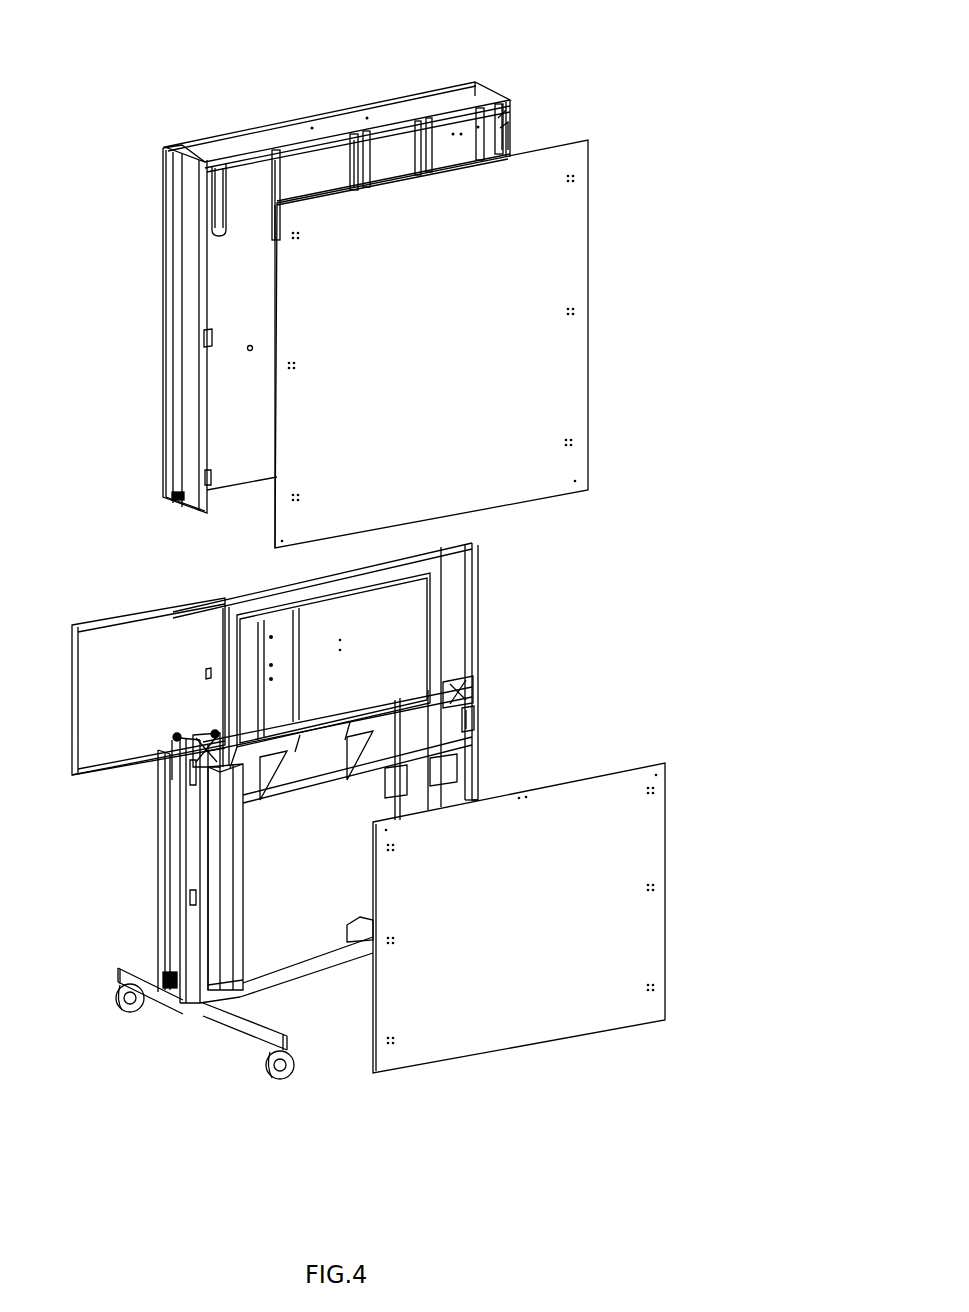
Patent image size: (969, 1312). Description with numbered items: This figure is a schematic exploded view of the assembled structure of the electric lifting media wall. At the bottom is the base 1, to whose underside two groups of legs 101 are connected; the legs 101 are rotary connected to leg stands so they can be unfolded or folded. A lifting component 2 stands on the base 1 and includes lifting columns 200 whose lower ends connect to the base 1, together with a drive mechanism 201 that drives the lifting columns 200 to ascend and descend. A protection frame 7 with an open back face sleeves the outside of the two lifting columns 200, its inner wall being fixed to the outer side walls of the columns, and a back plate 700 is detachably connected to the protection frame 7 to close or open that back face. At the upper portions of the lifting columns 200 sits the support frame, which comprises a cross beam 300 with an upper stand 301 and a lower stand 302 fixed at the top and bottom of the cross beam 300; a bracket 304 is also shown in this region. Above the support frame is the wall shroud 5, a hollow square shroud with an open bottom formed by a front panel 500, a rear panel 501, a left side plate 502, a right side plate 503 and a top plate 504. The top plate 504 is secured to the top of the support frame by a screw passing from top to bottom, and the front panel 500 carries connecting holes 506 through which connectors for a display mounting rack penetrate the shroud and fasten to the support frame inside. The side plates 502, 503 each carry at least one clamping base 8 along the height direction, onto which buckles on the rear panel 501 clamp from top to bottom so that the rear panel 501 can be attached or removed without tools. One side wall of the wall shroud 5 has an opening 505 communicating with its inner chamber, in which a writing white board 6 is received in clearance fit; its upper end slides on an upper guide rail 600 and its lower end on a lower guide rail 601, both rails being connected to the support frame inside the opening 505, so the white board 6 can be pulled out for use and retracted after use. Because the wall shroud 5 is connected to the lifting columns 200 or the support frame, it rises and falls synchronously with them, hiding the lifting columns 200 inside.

The base 1 is at (307, 963).
The leg 101 is at (243, 1027).
The lifting component 2 is at (217, 902).
The lifting column 200 is at (233, 855).
The drive mechanism 201 is at (212, 742).
The wall shroud 5 is at (143, 347).
The front panel 500 is at (252, 207).
The rear panel 501 is at (527, 262).
The left side plate 502 is at (510, 110).
The right side plate 503 is at (185, 415).
The top plate 504 is at (417, 106).
The opening 505 is at (178, 233).
The connecting hole 506 is at (165, 150).
The writing white board 6 is at (113, 735).
The upper guide rail 600 is at (107, 623).
The lower guide rail 601 is at (143, 763).
The protection frame 7 is at (177, 880).
The clamping base 8 is at (207, 333).
The cross beam 300 is at (472, 687).
The upper stand 301 is at (437, 637).
The lower stand 302 is at (410, 760).
The connecting bracket 304 is at (470, 677).
The back plate 700 is at (657, 832).